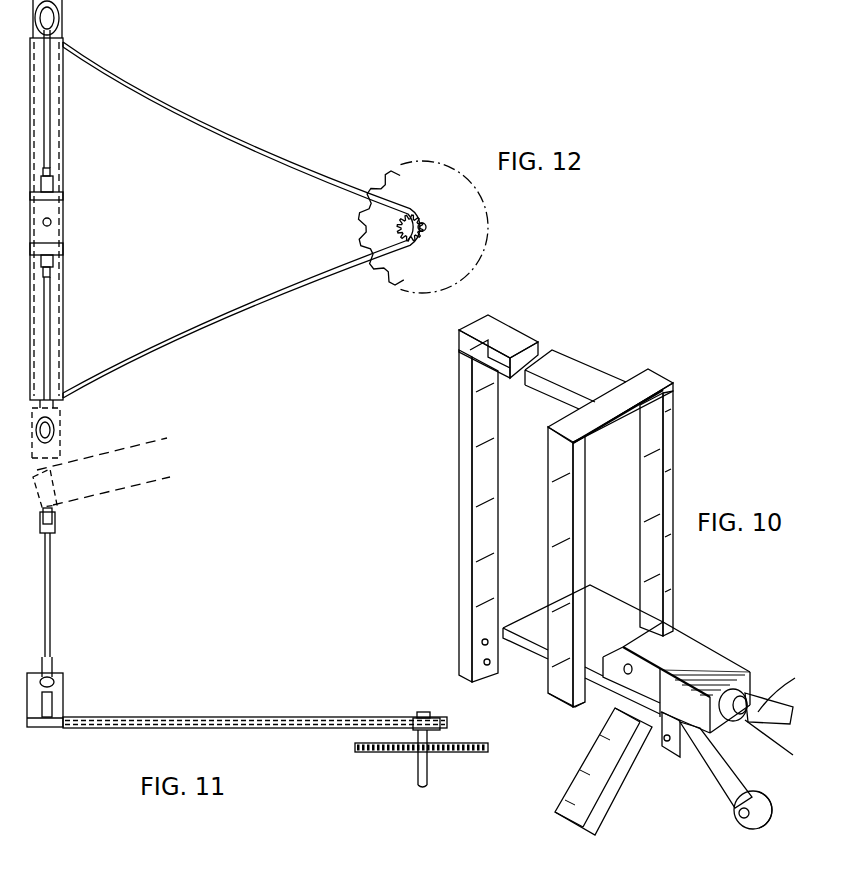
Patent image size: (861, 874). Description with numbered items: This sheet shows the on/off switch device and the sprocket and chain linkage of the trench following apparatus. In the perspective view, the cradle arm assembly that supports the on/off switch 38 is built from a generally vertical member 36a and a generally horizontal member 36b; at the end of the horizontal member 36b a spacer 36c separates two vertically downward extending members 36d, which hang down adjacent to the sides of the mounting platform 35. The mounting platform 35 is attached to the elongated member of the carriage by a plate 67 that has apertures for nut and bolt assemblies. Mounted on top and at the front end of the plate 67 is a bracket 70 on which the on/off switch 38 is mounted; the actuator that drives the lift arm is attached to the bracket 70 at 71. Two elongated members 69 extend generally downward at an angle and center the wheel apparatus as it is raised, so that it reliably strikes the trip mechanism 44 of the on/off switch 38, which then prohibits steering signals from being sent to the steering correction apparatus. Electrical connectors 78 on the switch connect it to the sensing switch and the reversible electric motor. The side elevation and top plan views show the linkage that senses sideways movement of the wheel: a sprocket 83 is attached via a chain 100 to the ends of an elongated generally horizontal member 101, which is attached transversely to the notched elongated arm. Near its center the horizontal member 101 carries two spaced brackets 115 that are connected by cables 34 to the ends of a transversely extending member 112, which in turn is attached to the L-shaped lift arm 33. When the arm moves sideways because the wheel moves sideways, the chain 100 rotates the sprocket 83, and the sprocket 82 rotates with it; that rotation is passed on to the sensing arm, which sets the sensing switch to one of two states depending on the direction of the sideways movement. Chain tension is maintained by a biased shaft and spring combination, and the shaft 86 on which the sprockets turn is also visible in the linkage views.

In FIG. 11, the lift arm 33 is at (138, 477).
In FIG. 12, the cables 34 is at (47, 347).
In FIG. 11, the cables 34 is at (50, 590).
In FIG. 10, the mounting platform 35 is at (583, 734).
In FIG. 10, the vertical member 36a is at (461, 485).
In FIG. 10, the horizontal member 36b is at (517, 338).
In FIG. 10, the spacer 36c is at (625, 384).
In FIG. 10, the vertically downward extending members 36d is at (556, 488).
In FIG. 10, the on/off switch 38 is at (718, 668).
In FIG. 10, the trip mechanism 44 is at (728, 800).
In FIG. 10, the plate 67 is at (528, 652).
In FIG. 10, the elongated members 69 is at (625, 768).
In FIG. 10, the bracket 70 is at (681, 638).
In FIG. 10, the actuator attachment point 71 is at (626, 666).
In FIG. 10, the electrical connectors 78 is at (781, 697).
In FIG. 12, the sprocket 82 is at (468, 228).
In FIG. 11, the sprocket 82 is at (355, 752).
In FIG. 12, the sprocket 83 is at (410, 212).
In FIG. 11, the sprocket 83 is at (445, 722).
In FIG. 12, the shaft 86 is at (423, 231).
In FIG. 11, the shaft 86 is at (428, 775).
In FIG. 12, the chain 100 is at (190, 125).
In FIG. 11, the chain 100 is at (188, 717).
In FIG. 12, the elongated horizontal member 101 is at (58, 308).
In FIG. 11, the elongated horizontal member 101 is at (42, 728).
In FIG. 12, the transversely extending member 112 is at (60, 435).
In FIG. 11, the transversely extending member 112 is at (56, 494).
In FIG. 12, the brackets 115 is at (55, 199).
In FIG. 11, the brackets 115 is at (57, 683).